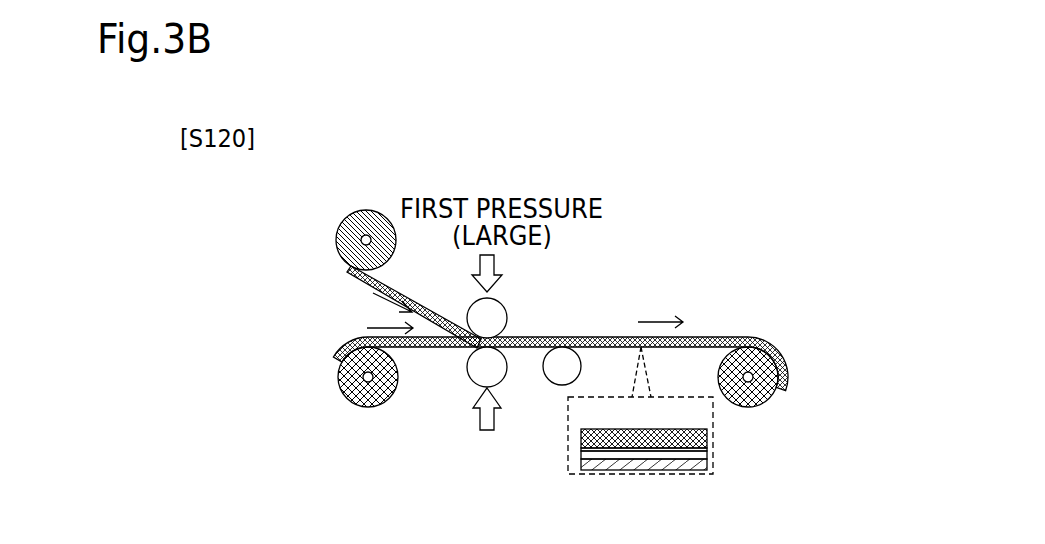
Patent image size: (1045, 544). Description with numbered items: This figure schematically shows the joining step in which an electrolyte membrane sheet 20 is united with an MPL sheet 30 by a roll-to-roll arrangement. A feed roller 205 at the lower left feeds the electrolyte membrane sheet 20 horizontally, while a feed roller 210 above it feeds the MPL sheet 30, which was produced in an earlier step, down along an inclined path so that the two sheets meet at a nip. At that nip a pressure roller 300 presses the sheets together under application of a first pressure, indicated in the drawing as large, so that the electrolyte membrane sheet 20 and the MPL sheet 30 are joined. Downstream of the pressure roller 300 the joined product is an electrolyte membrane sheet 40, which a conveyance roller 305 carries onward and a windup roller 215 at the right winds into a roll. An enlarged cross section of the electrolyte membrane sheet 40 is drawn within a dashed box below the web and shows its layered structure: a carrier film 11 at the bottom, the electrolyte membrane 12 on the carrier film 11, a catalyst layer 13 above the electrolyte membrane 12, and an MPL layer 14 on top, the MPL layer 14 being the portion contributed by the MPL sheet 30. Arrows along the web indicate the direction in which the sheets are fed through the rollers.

The MPL sheet 30 is at (384, 259).
The feed roller 210 is at (366, 210).
The electrolyte membrane sheet 40 is at (704, 337).
The MPL layer 14 is at (581, 432).
The catalyst layer 13 is at (581, 449).
The electrolyte membrane 12 is at (581, 455).
The carrier film 11 is at (581, 468).
The electrolyte membrane sheet 20 is at (365, 385).
The feed roller 205 is at (340, 378).
The windup roller 215 is at (798, 350).
The pressure roller 300 is at (501, 304).
The conveyance roller 305 is at (566, 348).